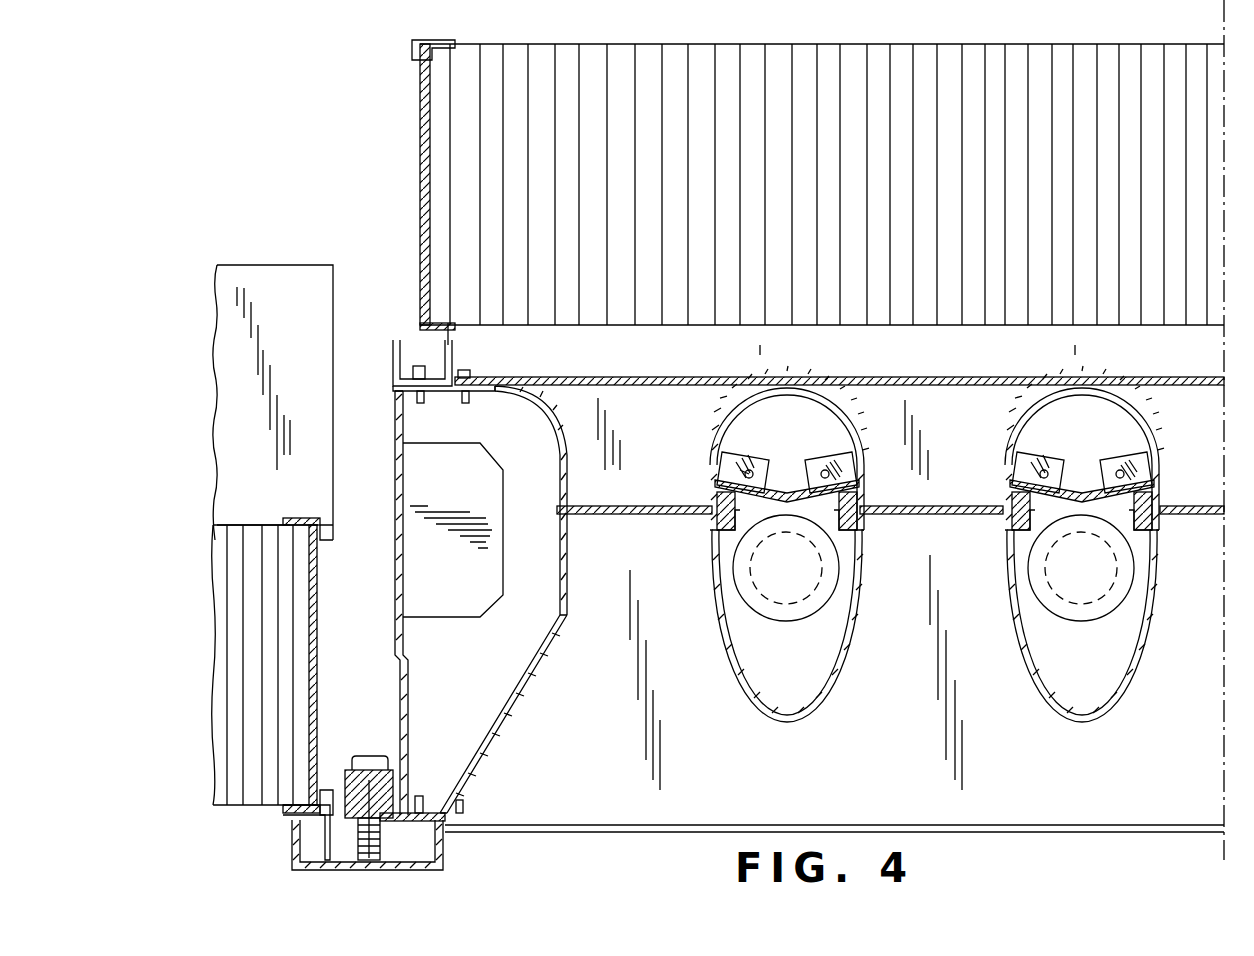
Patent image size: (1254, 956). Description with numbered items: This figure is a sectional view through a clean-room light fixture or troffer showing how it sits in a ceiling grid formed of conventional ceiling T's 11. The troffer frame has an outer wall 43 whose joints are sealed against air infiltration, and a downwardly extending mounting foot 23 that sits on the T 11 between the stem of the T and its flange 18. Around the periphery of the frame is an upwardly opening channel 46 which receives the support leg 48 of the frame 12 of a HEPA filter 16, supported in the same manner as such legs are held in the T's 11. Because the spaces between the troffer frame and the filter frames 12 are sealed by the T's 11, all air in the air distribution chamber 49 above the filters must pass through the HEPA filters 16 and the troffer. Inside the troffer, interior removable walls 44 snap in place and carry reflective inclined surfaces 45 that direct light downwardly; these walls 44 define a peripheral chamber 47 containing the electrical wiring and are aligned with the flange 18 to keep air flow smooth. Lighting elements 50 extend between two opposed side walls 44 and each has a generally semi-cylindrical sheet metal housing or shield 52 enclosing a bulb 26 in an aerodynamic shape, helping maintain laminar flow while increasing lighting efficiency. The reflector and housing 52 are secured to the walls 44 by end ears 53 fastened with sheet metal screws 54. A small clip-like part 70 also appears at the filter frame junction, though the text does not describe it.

The ceiling T 11 is at (300, 872).
The frame of HEPA filter 12 is at (425, 188).
The HEPA filter 16 is at (440, 150).
The flange 18 is at (445, 832).
The mounting foot 23 is at (428, 848).
The bulb 26 is at (740, 572).
The outer wall 43 is at (398, 640).
The interior removable wall 44 is at (562, 598).
The reflective inclined surface 45 is at (523, 688).
The upwardly opening channel 46 is at (396, 340).
The peripheral chamber 47 is at (466, 660).
The support leg 48 is at (397, 357).
The air distribution chamber 49 is at (252, 233).
The lighting element 50 is at (850, 640).
The semi-cylindrical housing or shield 52 is at (862, 450).
The end ear 53 is at (810, 458).
The sheet metal screw 54 is at (745, 470).
The clip 70 is at (470, 375).